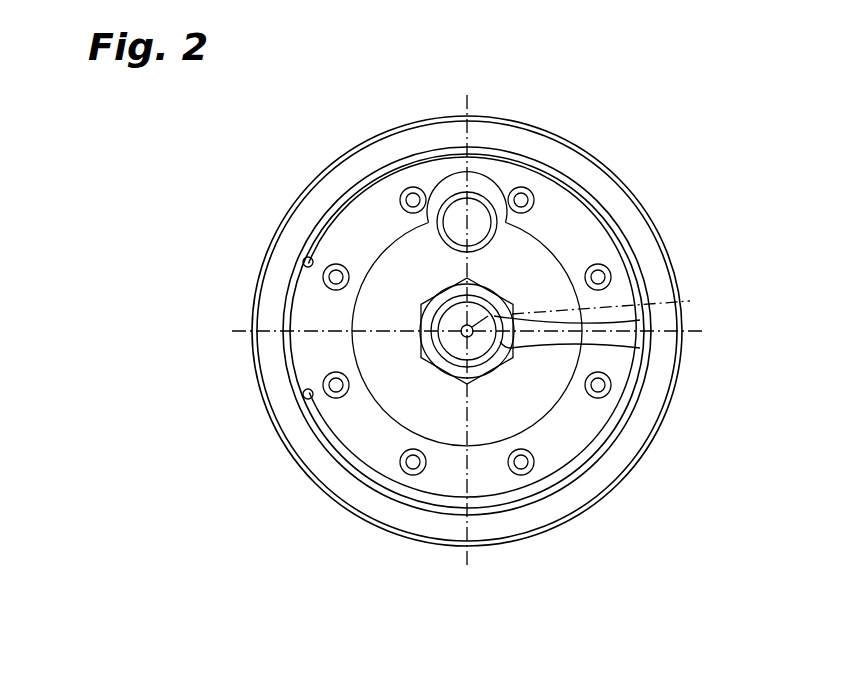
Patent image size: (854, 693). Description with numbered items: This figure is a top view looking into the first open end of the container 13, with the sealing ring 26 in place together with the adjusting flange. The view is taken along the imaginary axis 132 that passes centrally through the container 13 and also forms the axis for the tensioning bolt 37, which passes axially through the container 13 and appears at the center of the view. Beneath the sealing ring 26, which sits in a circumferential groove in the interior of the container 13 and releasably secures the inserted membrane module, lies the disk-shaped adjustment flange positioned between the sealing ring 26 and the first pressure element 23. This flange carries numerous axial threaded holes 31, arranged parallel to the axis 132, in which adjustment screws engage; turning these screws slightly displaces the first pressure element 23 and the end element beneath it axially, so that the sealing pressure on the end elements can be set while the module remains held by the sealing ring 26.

The container 13 is at (655, 443).
The first pressure element 23 is at (482, 185).
The sealing ring 26 is at (370, 477).
The axial threaded holes 31 is at (536, 194).
The tensioning bolt 37 is at (643, 348).
The axis 132 is at (690, 301).